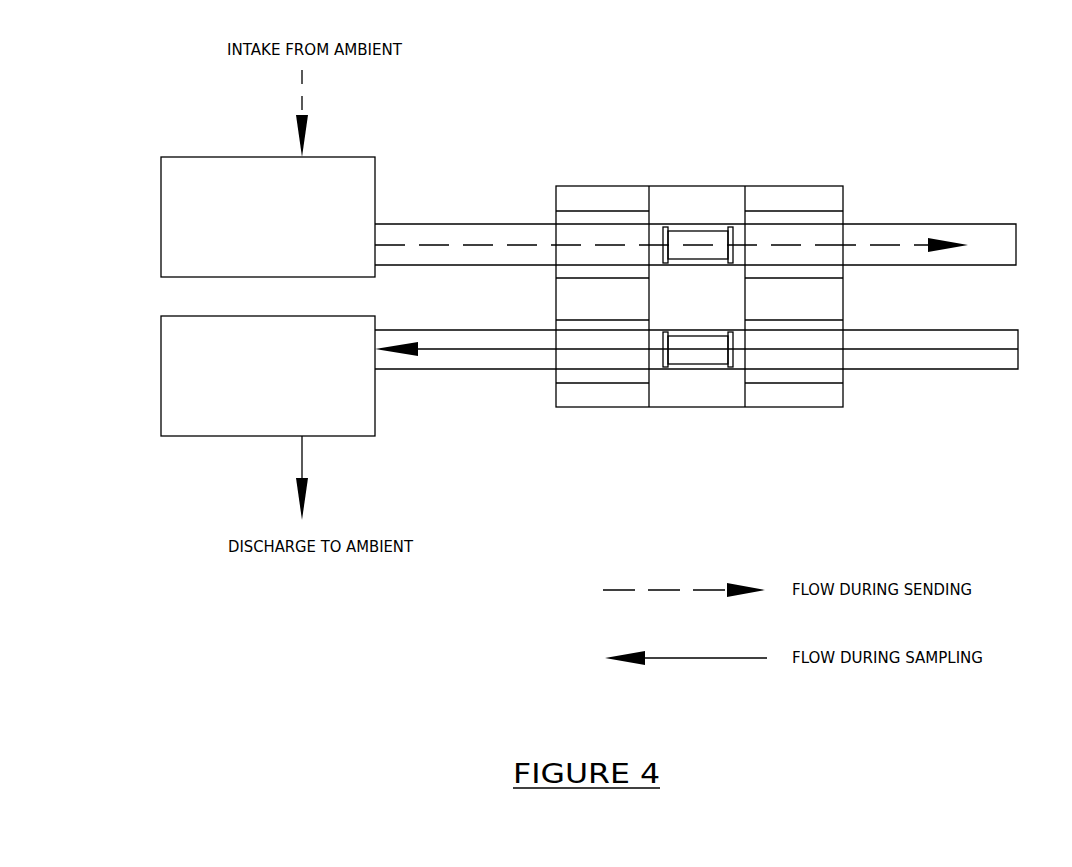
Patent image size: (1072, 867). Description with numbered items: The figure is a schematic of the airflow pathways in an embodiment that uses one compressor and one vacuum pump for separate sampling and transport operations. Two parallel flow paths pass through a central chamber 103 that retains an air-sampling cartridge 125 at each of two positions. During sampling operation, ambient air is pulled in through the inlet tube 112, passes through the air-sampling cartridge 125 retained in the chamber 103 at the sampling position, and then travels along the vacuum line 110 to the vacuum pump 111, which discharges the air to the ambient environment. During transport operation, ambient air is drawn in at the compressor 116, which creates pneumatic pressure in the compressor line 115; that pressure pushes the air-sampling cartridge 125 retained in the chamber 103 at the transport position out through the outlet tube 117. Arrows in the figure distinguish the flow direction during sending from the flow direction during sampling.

The chamber 103 is at (735, 225).
The vacuum line 110 is at (417, 370).
The vacuum pump 111 is at (173, 437).
The inlet tube 112 is at (920, 370).
The compressor line 115 is at (460, 224).
The compressor 116 is at (182, 157).
The outlet tube 117 is at (957, 225).
The air-sampling cartridge 125 is at (684, 227).